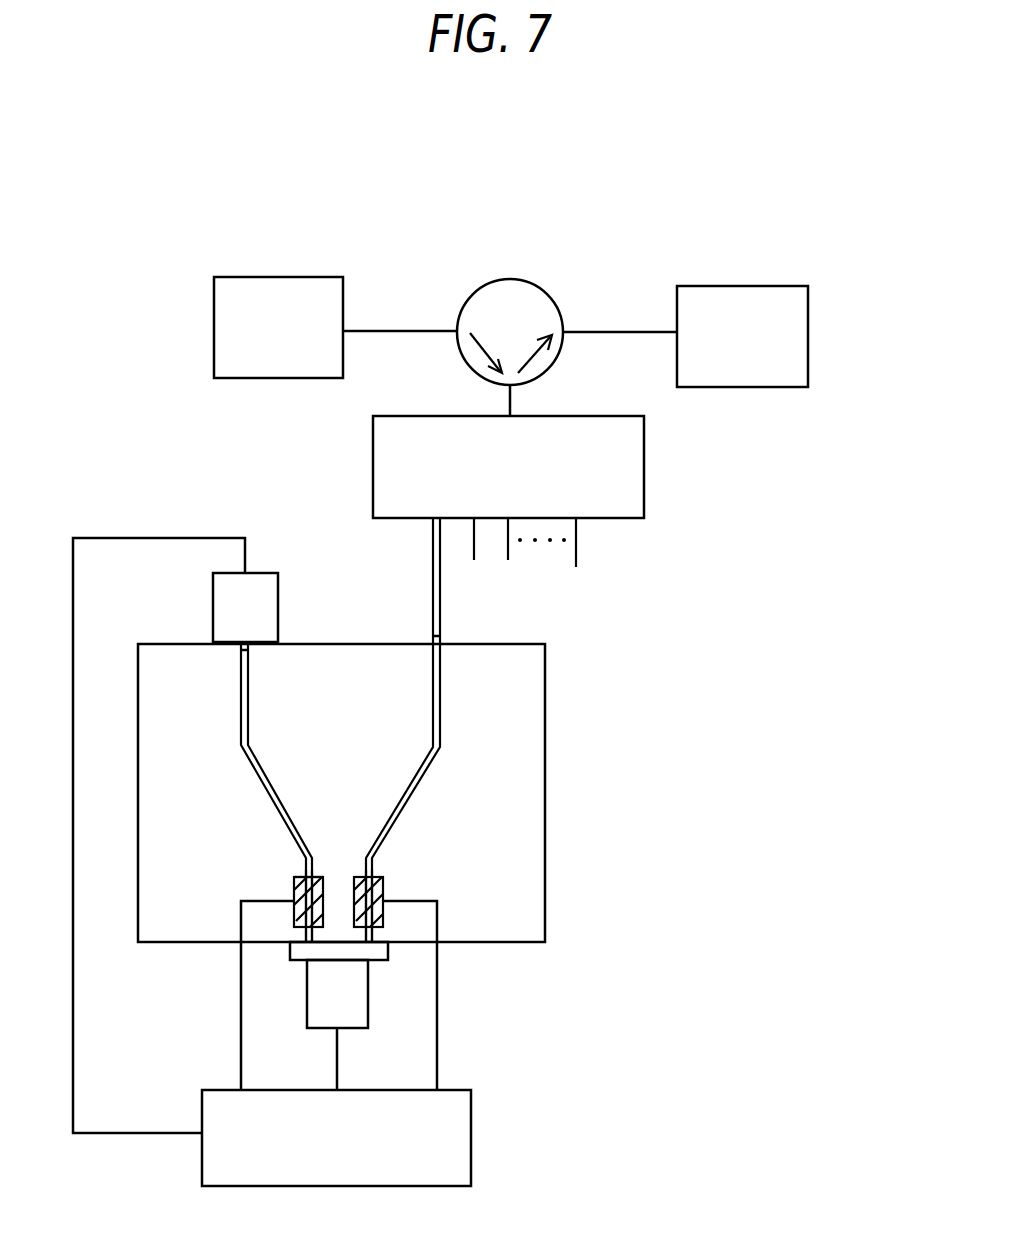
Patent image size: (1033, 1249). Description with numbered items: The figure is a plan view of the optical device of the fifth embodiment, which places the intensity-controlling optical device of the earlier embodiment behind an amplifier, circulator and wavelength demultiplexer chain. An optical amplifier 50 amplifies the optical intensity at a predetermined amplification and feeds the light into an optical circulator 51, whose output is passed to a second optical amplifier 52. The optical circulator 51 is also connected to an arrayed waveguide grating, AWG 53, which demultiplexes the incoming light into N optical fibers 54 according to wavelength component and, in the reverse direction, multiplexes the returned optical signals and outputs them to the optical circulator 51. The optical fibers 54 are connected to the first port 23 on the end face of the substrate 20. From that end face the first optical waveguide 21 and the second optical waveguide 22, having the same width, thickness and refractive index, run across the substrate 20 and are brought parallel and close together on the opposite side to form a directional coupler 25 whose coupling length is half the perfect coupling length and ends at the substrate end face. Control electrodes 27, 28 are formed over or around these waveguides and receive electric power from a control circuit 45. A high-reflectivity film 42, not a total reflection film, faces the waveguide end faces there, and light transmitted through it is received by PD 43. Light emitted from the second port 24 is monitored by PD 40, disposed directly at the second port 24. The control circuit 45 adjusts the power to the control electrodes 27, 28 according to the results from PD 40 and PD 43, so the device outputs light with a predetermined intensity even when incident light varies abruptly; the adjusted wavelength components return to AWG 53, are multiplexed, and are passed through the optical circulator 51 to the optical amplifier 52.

The substrate 20 is at (512, 645).
The first optical waveguide 21 is at (443, 734).
The second optical waveguide 22 is at (248, 737).
The first port 23 is at (440, 645).
The second port 24 is at (240, 645).
The directional coupler 25 is at (335, 930).
The control electrode 27 is at (376, 877).
The control electrode 28 is at (312, 877).
The PD 40 is at (265, 573).
The high-reflectivity film 42 is at (388, 960).
The PD 43 is at (360, 1030).
The control circuit 45 is at (471, 1137).
The optical amplifier 50 is at (326, 277).
The optical circulator 51 is at (500, 280).
The optical amplifier 52 is at (763, 286).
The arrayed waveguide grating (AWG) 53 is at (644, 462).
The optical fibers 54 is at (604, 545).